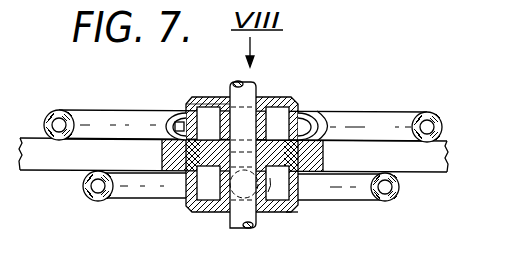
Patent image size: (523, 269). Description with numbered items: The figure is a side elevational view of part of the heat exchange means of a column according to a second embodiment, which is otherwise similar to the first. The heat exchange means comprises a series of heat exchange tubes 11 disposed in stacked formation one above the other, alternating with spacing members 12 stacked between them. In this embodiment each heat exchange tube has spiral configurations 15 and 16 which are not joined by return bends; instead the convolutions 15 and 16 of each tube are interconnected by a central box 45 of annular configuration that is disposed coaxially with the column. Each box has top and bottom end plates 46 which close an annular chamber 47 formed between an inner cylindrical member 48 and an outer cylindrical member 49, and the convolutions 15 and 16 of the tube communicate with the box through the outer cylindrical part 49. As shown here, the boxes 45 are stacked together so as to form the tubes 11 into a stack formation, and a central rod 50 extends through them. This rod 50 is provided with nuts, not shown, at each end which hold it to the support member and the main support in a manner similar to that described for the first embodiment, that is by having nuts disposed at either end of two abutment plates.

The heat exchange tube 11 is at (78, 108).
The spacing member 12 is at (62, 163).
The fluid ingoing tube length 15 is at (141, 115).
The spiral configuration 16 is at (397, 110).
The central box 45 is at (303, 98).
The end plate 46 is at (223, 97).
The annular chamber 47 is at (200, 100).
The inner cylindrical member 48 is at (270, 196).
The outer cylindrical member 49 is at (300, 205).
The central rod 50 is at (262, 90).